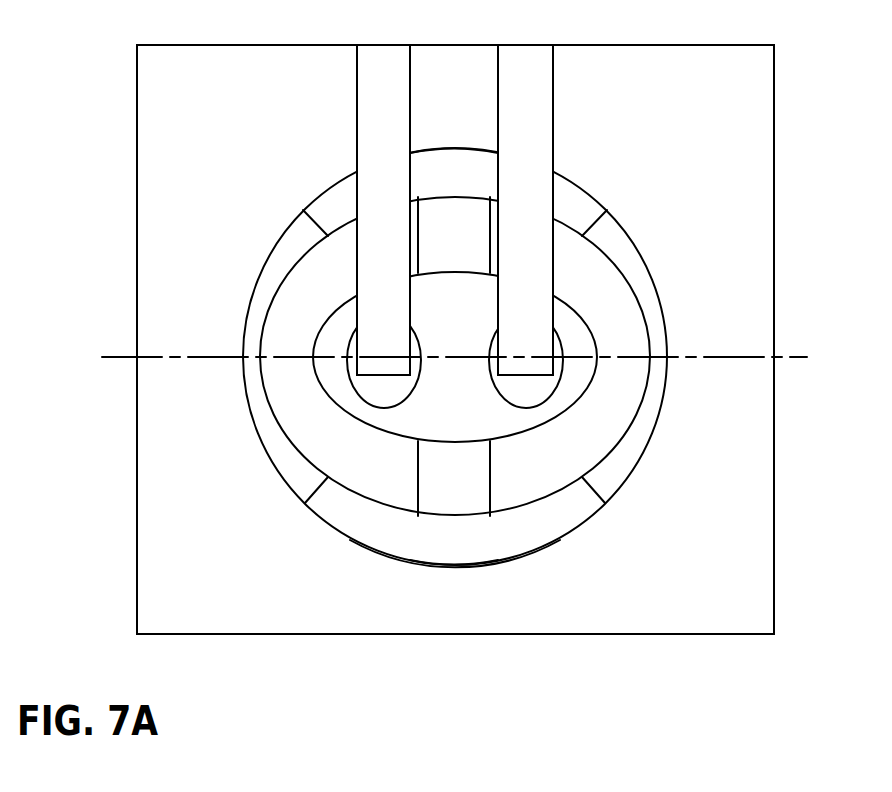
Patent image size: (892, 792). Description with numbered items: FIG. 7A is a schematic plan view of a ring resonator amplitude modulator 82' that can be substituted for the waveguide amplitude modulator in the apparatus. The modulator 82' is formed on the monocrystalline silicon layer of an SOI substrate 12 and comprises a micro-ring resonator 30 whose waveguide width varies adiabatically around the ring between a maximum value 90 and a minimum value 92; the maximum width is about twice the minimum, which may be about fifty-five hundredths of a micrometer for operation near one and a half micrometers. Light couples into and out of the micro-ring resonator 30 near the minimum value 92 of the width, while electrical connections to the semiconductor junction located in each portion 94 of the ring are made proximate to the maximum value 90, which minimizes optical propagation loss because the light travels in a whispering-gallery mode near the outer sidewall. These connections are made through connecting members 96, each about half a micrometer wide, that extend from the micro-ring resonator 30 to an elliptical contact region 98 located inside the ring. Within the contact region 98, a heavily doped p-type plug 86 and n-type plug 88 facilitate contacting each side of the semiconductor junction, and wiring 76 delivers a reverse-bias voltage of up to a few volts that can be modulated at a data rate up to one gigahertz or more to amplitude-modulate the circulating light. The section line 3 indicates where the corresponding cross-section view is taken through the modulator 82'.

The substrate 12 is at (170, 592).
The micro-ring resonator 30 is at (619, 488).
The wiring 76 is at (371, 112).
The ring resonator amplitude modulator 82' is at (725, 686).
The p-type-doped plug 86 is at (406, 400).
The n-type-doped plug 88 is at (505, 400).
The maximum value of the waveguide width 90 is at (455, 566).
The minimum value of the waveguide width 92 is at (261, 358).
The portion of the micro-ring resonator 94 is at (442, 184).
The connecting member 96 is at (442, 252).
The contact region 98 is at (336, 404).
The section line 3- 3 is at (102, 357).